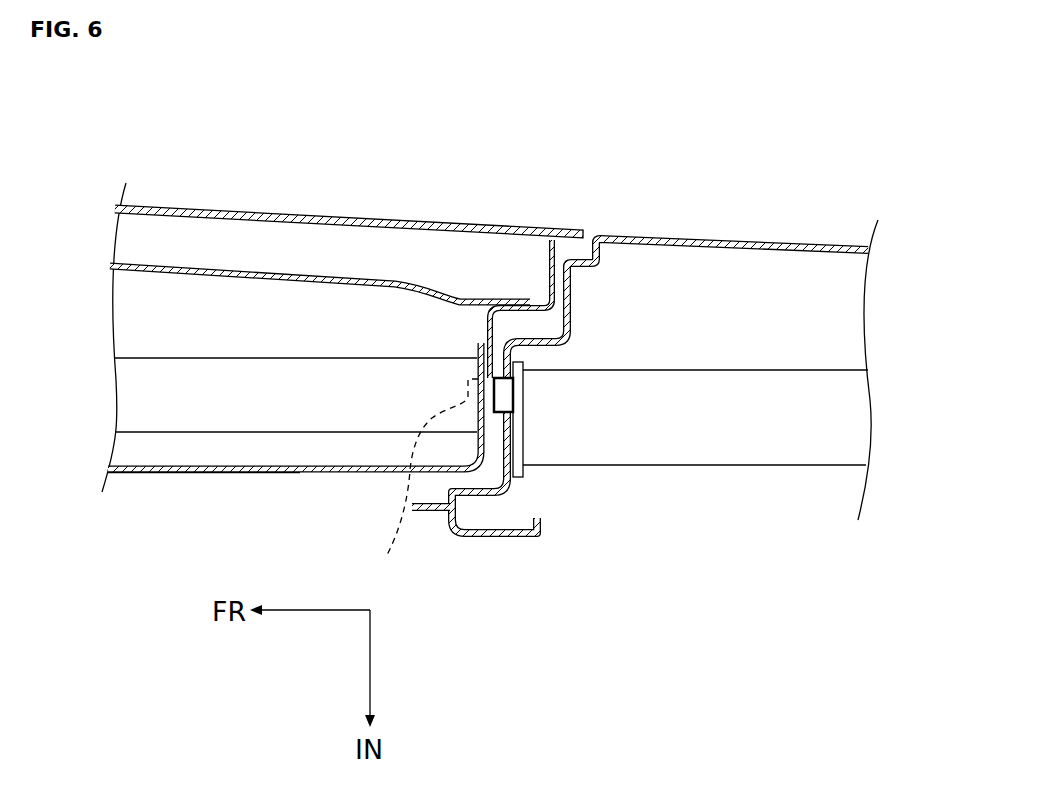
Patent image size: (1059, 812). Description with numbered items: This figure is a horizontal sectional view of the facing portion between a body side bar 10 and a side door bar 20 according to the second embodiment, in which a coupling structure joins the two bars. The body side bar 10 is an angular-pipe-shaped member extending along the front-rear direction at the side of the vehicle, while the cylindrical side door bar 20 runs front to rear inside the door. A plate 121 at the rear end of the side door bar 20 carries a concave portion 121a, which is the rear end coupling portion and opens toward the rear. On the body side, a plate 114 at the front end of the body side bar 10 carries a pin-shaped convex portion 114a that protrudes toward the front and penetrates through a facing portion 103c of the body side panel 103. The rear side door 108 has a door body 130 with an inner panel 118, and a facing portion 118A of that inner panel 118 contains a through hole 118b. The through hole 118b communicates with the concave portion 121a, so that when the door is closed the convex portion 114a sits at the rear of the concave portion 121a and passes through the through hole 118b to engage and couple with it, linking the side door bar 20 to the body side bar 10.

The body side bar 10 is at (647, 466).
The side door bar 20 is at (360, 356).
The body side panel 103 is at (716, 232).
The facing portion 103c is at (525, 302).
The rear side door 108 is at (306, 208).
The plate 114 is at (522, 478).
The convex portion 114a is at (509, 414).
The inner panel 118 is at (253, 473).
The facing portion 118A is at (508, 300).
The through hole 118b is at (469, 400).
The plate 121 is at (479, 344).
The concave portion 121a is at (402, 475).
The door body 130 is at (150, 473).